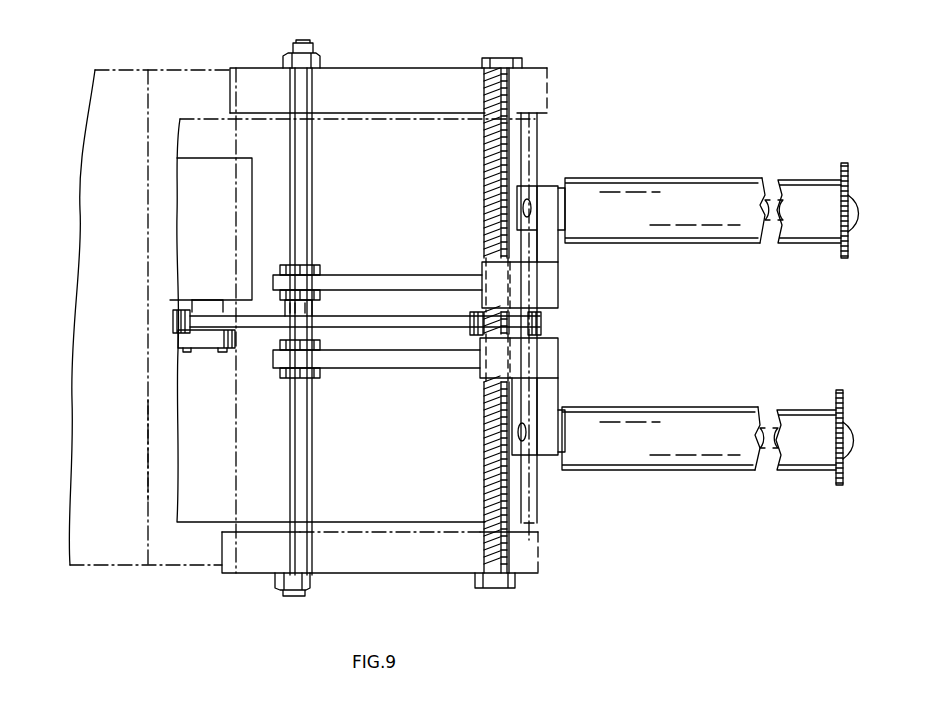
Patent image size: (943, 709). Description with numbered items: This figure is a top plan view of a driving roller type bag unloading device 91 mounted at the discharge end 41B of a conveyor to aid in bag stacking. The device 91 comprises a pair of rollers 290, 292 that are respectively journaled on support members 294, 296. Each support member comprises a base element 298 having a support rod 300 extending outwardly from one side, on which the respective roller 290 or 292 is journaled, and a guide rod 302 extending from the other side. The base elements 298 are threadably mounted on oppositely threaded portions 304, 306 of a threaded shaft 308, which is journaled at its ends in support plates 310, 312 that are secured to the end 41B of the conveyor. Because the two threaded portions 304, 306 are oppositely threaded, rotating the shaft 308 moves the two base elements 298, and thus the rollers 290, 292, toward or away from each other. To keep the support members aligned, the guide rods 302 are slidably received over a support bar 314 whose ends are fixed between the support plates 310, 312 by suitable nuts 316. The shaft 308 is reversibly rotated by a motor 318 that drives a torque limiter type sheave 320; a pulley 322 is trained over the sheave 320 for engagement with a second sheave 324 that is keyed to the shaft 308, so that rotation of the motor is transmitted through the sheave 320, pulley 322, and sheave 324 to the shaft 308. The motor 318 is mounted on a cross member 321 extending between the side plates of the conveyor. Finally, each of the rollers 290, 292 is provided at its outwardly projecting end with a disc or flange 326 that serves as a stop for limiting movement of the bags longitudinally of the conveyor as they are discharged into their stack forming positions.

The discharge end 41B is at (183, 83).
The bag unloading device 91 is at (737, 142).
The roller 290 is at (673, 202).
The roller 292 is at (672, 422).
The support member 294 is at (549, 180).
The support member 296 is at (543, 469).
The base element 298 is at (548, 290).
The support rod 300 is at (765, 197).
The guide rod 302 is at (385, 283).
The threaded portion 304 is at (507, 138).
The threaded portion 306 is at (495, 478).
The threaded shaft 308 is at (491, 408).
The support plate 310 is at (533, 83).
The support plate 312 is at (535, 566).
The support bar 314 is at (300, 232).
The nut 316 is at (321, 62).
The motor 318 is at (197, 218).
The sheave 320 is at (170, 335).
The cross member 321 is at (158, 443).
The pulley 322 is at (263, 327).
The sheave 324 is at (540, 324).
The flange 326 is at (841, 170).